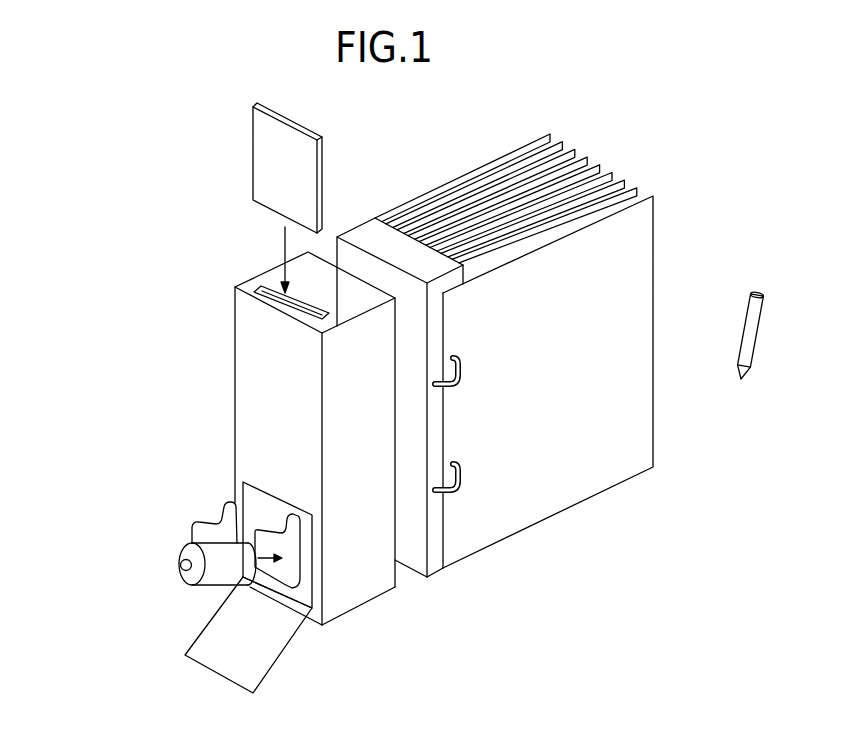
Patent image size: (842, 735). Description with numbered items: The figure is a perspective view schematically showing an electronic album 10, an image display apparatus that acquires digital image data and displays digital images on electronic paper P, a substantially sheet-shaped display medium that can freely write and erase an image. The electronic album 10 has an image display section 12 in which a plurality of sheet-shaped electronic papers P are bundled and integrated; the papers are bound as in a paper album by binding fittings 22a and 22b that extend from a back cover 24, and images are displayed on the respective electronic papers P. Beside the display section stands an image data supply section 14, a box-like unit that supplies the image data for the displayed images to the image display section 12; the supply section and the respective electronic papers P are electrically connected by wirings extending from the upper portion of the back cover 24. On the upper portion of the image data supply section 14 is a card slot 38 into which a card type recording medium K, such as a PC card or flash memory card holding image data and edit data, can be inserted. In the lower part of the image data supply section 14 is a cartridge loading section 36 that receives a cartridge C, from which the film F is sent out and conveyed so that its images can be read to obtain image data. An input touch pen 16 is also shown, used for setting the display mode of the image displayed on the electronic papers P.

The electronic album 10 is at (674, 255).
The image display section 12 is at (530, 180).
The electronic paper P is at (605, 170).
The image data supply section 14 is at (240, 395).
The input touch pen 16 is at (750, 343).
The binding fitting 22a is at (447, 484).
The binding fitting 22b is at (462, 383).
The back cover 24 is at (350, 237).
The cartridge loading section 36 is at (277, 577).
The card slot 38 is at (265, 280).
The card type recording medium K is at (263, 152).
The film F is at (215, 526).
The cartridge C is at (182, 573).